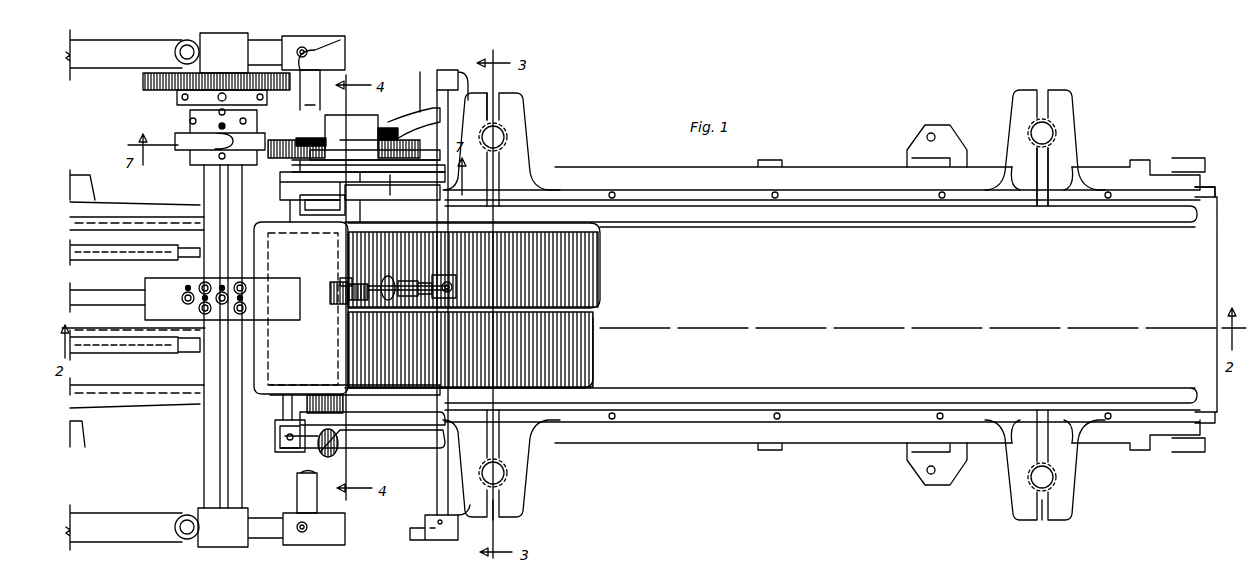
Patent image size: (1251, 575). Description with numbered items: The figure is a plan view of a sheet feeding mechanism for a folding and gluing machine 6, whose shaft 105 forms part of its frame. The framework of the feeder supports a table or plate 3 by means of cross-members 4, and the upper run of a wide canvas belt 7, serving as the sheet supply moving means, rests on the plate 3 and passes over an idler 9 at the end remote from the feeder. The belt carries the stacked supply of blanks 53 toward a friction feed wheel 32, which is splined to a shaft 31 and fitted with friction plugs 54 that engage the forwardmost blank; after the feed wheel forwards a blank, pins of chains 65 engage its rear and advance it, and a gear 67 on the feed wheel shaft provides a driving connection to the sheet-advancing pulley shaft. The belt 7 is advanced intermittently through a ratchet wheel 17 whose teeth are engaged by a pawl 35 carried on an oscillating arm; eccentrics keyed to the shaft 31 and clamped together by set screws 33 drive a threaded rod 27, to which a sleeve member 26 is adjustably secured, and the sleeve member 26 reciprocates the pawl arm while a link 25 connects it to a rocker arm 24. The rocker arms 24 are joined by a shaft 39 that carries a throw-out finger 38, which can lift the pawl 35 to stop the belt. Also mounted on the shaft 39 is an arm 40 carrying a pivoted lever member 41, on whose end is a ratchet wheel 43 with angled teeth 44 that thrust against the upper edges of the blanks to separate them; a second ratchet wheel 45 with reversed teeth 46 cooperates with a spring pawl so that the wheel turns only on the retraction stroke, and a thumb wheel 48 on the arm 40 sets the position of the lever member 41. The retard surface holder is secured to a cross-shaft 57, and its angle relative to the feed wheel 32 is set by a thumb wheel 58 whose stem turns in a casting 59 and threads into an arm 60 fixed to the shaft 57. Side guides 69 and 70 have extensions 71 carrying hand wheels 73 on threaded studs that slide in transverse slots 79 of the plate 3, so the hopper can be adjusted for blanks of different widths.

The table or plate 3 is at (706, 430).
The cross-members 4 is at (772, 448).
The folding and gluing machine 6 is at (268, 530).
The wide canvas belt 7 is at (1208, 278).
The idler 9 is at (1208, 193).
The ratchet wheel 17 is at (410, 148).
The rocker arm 24 is at (445, 540).
The link 25 is at (420, 118).
The sleeve member 26 is at (375, 137).
The threaded rod 27 is at (305, 115).
The shaft 31 is at (210, 456).
The feed wheel 32 is at (203, 289).
The set screws 33 is at (222, 126).
The pawl 35 is at (373, 150).
The throw-out finger 38 is at (372, 163).
The shaft 39 is at (442, 490).
The arm 40 is at (408, 286).
The lever member 41 is at (347, 277).
The ratchet wheel 43 is at (335, 306).
The ratchet teeth 44 is at (335, 330).
The ratchet wheel 45 is at (345, 288).
The teeth 46 is at (325, 278).
The thumb wheel 48 is at (385, 292).
The stacked supply of blanks 53 is at (600, 284).
The plugs 54 is at (188, 286).
The cross-shaft 57 is at (290, 402).
The thumb wheel 58 is at (322, 455).
The casting 59 is at (285, 446).
The arm 60 is at (277, 432).
The chains 65 is at (150, 350).
The rack 67 is at (148, 88).
The side guide 69 is at (573, 395).
The side guide 70 is at (540, 205).
The extension 71 is at (1055, 450).
The hand wheel 73 is at (1050, 482).
The transverse slot 79 is at (1046, 512).
The shaft 105 is at (310, 83).